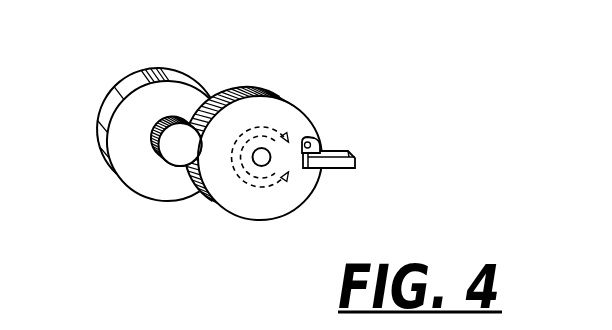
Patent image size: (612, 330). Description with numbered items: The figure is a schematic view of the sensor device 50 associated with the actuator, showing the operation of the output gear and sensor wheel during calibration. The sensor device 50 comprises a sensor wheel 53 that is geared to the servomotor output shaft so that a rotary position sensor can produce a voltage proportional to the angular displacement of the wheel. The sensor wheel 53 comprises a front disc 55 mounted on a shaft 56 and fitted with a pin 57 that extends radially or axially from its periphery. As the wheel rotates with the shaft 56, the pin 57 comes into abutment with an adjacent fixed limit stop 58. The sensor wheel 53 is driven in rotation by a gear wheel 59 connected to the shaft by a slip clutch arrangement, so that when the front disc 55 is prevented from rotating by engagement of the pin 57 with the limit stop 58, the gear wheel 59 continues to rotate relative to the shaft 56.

The sensor device 50 is at (310, 200).
The sensor wheel 53 is at (279, 127).
The front disc 55 is at (247, 207).
The shaft 56 is at (262, 157).
The pin 57 is at (317, 142).
The limit stop 58 is at (357, 161).
The gear wheel 59 is at (245, 83).